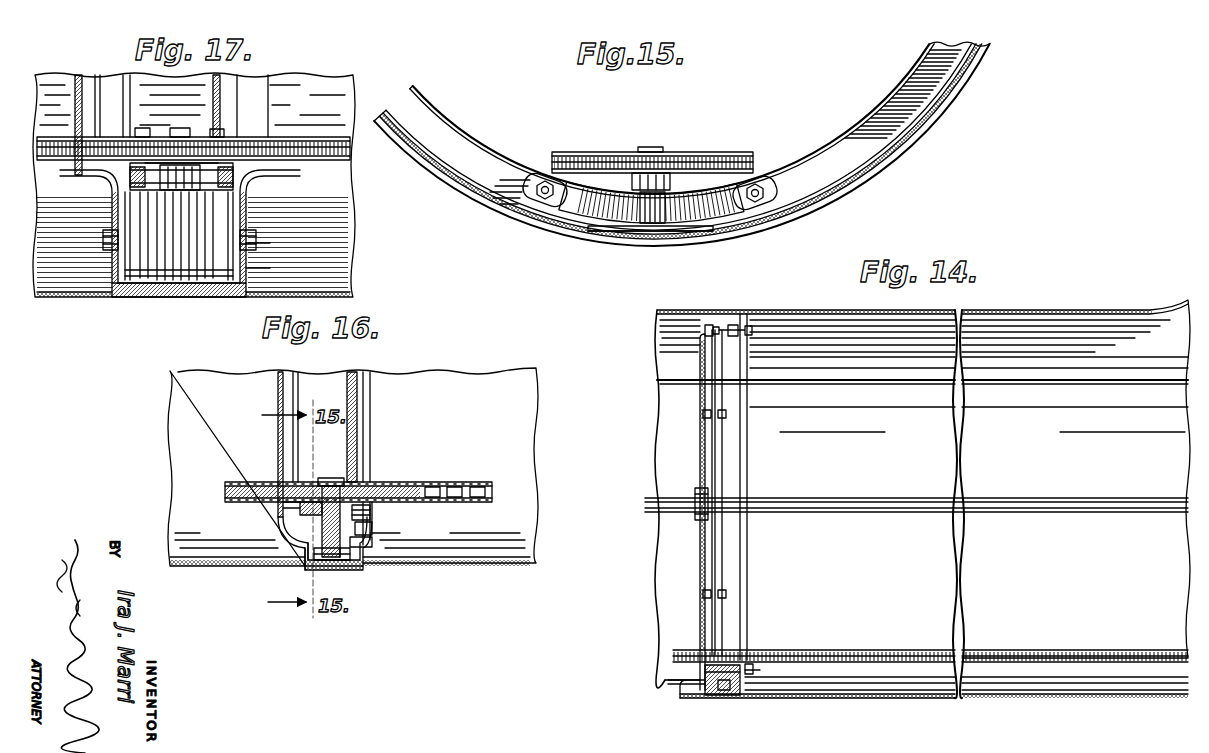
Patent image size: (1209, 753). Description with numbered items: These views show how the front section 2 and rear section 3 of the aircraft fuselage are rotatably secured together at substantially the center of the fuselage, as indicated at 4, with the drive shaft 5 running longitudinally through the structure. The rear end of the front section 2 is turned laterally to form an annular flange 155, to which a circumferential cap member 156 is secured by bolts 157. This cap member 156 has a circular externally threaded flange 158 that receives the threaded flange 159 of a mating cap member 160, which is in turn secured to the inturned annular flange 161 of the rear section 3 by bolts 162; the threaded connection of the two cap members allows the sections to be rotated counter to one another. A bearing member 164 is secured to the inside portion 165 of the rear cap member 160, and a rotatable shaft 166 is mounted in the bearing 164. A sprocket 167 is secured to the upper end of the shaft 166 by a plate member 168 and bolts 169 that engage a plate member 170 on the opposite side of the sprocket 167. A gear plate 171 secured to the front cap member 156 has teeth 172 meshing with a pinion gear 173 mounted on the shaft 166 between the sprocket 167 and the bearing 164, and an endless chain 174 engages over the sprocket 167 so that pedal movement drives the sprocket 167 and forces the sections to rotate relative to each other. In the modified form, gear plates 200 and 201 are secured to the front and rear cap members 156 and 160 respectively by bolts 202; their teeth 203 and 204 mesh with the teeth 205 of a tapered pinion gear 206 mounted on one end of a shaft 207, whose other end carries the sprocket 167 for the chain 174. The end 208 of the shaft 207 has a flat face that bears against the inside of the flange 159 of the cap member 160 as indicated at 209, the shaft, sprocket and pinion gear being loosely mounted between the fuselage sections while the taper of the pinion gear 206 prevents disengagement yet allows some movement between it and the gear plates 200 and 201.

In FIG. 17, the front section 2 is at (360, 293).
In FIG. 15, the front section 2 is at (853, 180).
In FIG. 16, the front section 2 is at (507, 570).
In FIG. 14, the front section 2 is at (1095, 698).
In FIG. 17, the rear section 3 is at (43, 297).
In FIG. 15, the rear section 3 is at (432, 167).
In FIG. 16, the rear section 3 is at (188, 570).
In FIG. 14, the rear section 3 is at (682, 700).
In FIG. 16, the rotatable connection 4 is at (357, 568).
In FIG. 14, the rotatable connection 4 is at (737, 700).
In FIG. 14, the drive shaft 5 is at (807, 503).
In FIG. 17, the annular flange 155 is at (247, 268).
In FIG. 16, the annular flange 155 is at (358, 530).
In FIG. 14, the annular flange 155 is at (740, 687).
In FIG. 17, the cap member 156 is at (260, 93).
In FIG. 15, the cap member 156 is at (482, 157).
In FIG. 16, the cap member 156 is at (363, 570).
In FIG. 14, the cap member 156 is at (747, 563).
In FIG. 17, the bolts 157 is at (247, 243).
In FIG. 16, the bolts 157 is at (373, 542).
In FIG. 14, the bolts 157 is at (750, 667).
In FIG. 17, the externally threaded flange 158 is at (153, 302).
In FIG. 15, the externally threaded flange 158 is at (452, 192).
In FIG. 16, the externally threaded flange 158 is at (317, 600).
In FIG. 14, the externally threaded flange 158 is at (723, 310).
In FIG. 17, the threaded flange 159 is at (125, 293).
In FIG. 15, the threaded flange 159 is at (398, 132).
In FIG. 16, the threaded flange 159 is at (318, 568).
In FIG. 14, the threaded flange 159 is at (707, 310).
In FIG. 17, the mating cap member 160 is at (75, 87).
In FIG. 15, the mating cap member 160 is at (837, 180).
In FIG. 16, the mating cap member 160 is at (278, 433).
In FIG. 14, the mating cap member 160 is at (702, 432).
In FIG. 17, the inturned annular flange 161 is at (127, 227).
In FIG. 16, the inturned annular flange 161 is at (307, 530).
In FIG. 14, the inturned annular flange 161 is at (700, 683).
In FIG. 17, the bolts 162 is at (103, 243).
In FIG. 14, the bolts 162 is at (705, 330).
In FIG. 15, the bearing member 164 is at (627, 230).
In FIG. 16, the bearing member 164 is at (360, 553).
In FIG. 15, the inside portion 165 is at (575, 227).
In FIG. 16, the inside portion 165 is at (333, 563).
In FIG. 15, the rotatable shaft 166 is at (650, 187).
In FIG. 16, the rotatable shaft 166 is at (337, 477).
In FIG. 17, the sprocket 167 is at (337, 140).
In FIG. 15, the sprocket 167 is at (550, 160).
In FIG. 16, the sprocket 167 is at (403, 492).
In FIG. 14, the sprocket 167 is at (755, 652).
In FIG. 17, the plate member 168 is at (237, 130).
In FIG. 16, the plate member 168 is at (363, 482).
In FIG. 17, the bolts 169 is at (120, 72).
In FIG. 16, the bolts 169 is at (302, 477).
In FIG. 17, the plate member 170 is at (227, 163).
In FIG. 16, the plate member 170 is at (298, 508).
In FIG. 15, the gear plate 171 is at (570, 207).
In FIG. 16, the gear plate 171 is at (370, 535).
In FIG. 15, the teeth 172 is at (720, 197).
In FIG. 15, the pinion gear 173 is at (657, 200).
In FIG. 16, the pinion gear 173 is at (317, 535).
In FIG. 14, the pinion gear 173 is at (703, 697).
In FIG. 17, the endless chain 174 is at (357, 162).
In FIG. 15, the endless chain 174 is at (753, 155).
In FIG. 16, the endless chain 174 is at (493, 482).
In FIG. 14, the endless chain 174 is at (878, 653).
In FIG. 17, the gear plate 200 is at (243, 220).
In FIG. 17, the gear plate 201 is at (123, 200).
In FIG. 15, the bolts 202 is at (543, 197).
In FIG. 17, the teeth 203 is at (237, 177).
In FIG. 17, the teeth 204 is at (143, 180).
In FIG. 17, the teeth 205 is at (202, 283).
In FIG. 17, the pinion gear 206 is at (173, 277).
In FIG. 17, the shaft 207 is at (192, 127).
In FIG. 17, the end 208 is at (187, 293).
In FIG. 17, the bearing point 209 is at (170, 303).